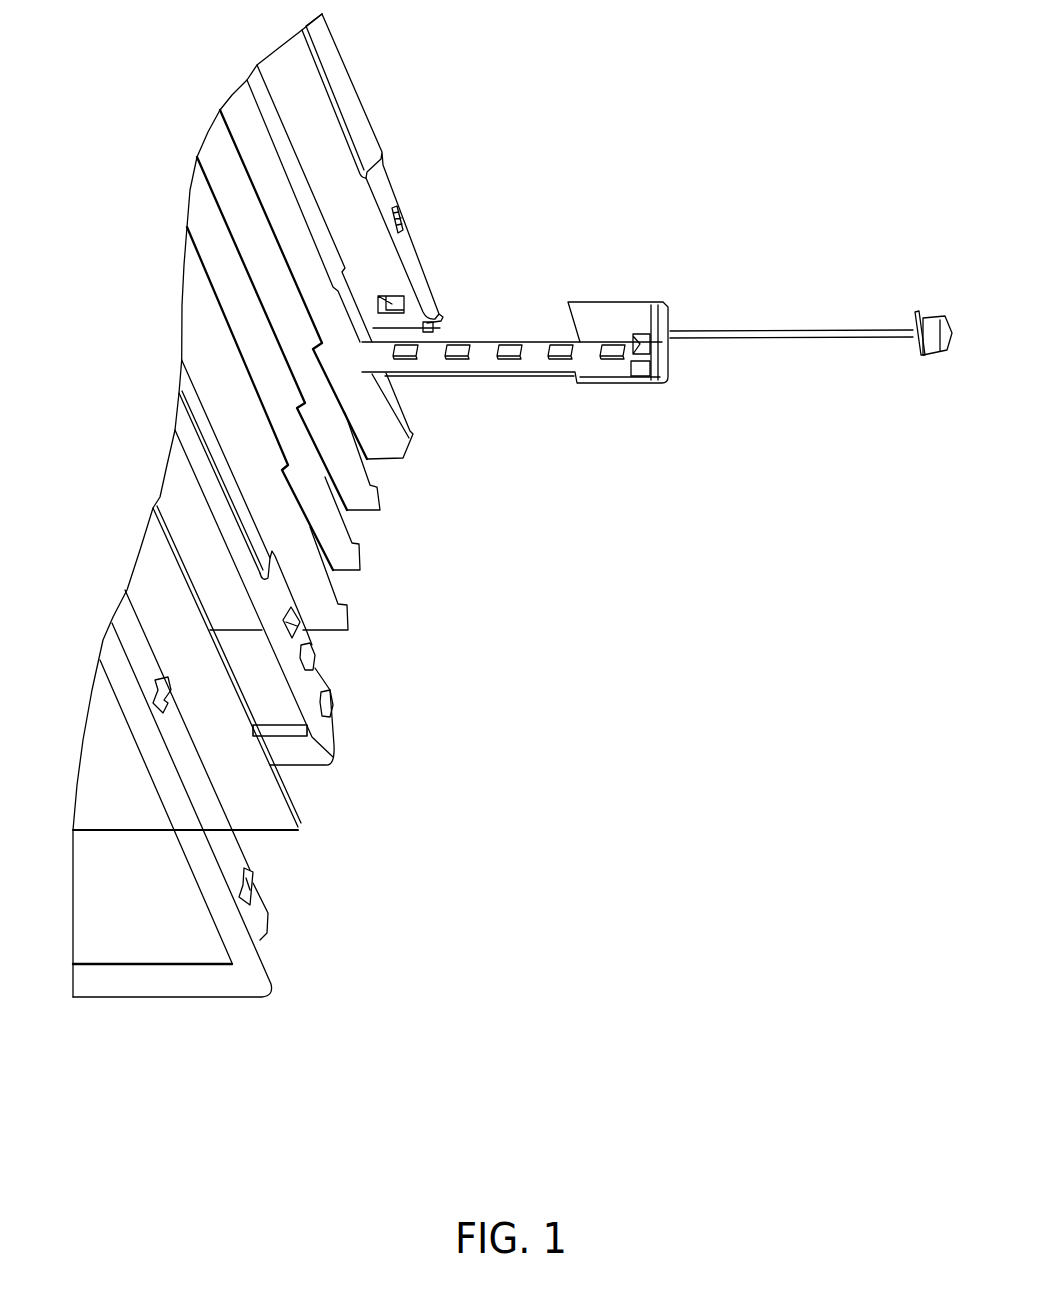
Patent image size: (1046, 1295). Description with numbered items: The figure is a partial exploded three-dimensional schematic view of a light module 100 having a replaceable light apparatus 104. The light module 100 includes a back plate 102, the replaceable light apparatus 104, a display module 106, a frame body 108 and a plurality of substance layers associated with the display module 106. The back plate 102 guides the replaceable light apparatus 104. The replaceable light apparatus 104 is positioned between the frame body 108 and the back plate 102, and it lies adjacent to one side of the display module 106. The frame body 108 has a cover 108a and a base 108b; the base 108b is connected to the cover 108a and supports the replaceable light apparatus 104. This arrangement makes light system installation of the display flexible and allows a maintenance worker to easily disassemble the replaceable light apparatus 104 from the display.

The light module 100 is at (864, 30).
The back plate 102 is at (422, 272).
The replaceable light apparatus 104 is at (580, 278).
The display module 106 is at (390, 462).
The frame body 108 is at (433, 1023).
The cover 108a is at (287, 704).
The base 108b is at (247, 550).